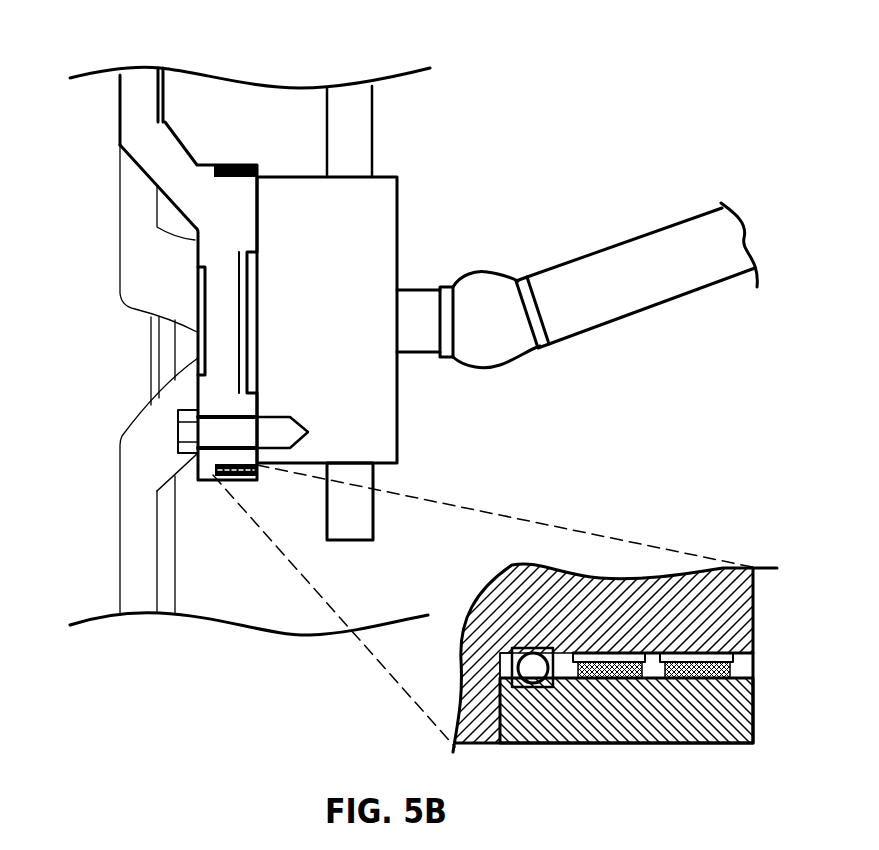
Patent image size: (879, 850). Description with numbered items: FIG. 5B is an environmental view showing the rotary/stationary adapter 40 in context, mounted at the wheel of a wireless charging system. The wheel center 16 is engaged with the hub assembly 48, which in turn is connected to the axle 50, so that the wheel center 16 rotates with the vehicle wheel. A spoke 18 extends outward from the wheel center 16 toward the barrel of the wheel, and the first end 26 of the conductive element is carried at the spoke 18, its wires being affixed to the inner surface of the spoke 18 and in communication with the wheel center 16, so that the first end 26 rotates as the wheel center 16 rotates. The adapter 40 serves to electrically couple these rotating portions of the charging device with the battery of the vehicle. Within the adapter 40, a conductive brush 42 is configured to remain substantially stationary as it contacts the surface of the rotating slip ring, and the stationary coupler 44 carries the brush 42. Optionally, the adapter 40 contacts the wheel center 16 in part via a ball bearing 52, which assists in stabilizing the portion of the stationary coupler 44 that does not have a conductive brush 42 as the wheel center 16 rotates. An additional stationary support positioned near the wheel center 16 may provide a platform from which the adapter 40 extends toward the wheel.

The wheel center 16 is at (207, 256).
The spoke 18 is at (127, 108).
The first end 26 is at (167, 103).
The rotary/stationary adapter 40 is at (592, 660).
The conductive brush 42 is at (625, 656).
The stationary coupler 44 is at (750, 712).
The hub assembly 48 is at (385, 200).
The axle 50 is at (652, 263).
The ball bearing 52 is at (530, 662).